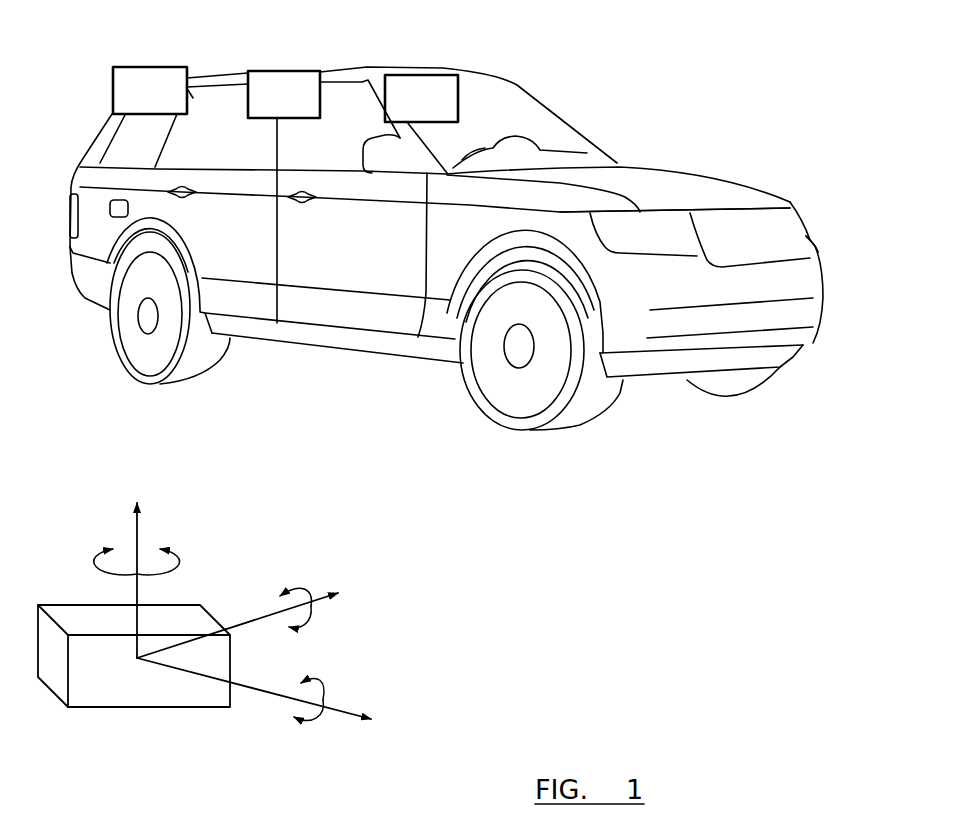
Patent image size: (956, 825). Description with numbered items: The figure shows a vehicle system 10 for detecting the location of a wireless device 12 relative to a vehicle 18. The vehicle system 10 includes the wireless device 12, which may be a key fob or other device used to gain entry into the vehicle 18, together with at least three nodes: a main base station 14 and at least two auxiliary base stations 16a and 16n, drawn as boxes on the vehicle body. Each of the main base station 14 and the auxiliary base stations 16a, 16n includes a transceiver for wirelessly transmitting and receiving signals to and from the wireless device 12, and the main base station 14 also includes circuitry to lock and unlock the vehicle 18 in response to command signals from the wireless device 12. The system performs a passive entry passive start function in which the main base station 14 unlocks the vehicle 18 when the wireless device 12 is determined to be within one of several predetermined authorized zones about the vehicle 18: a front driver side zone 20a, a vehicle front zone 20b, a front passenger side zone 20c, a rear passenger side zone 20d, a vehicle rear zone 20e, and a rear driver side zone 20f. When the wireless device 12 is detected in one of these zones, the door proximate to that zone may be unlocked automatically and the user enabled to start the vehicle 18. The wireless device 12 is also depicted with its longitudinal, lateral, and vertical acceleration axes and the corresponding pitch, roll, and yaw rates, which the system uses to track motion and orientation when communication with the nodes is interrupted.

The vehicle system 10 is at (580, 455).
The wireless device 12 is at (108, 684).
The main base station 14 is at (421, 98).
The auxiliary base station 16a is at (284, 94).
The auxiliary base station 16n is at (150, 90).
The vehicle 18 is at (812, 241).
The front driver side zone 20a is at (733, 129).
The vehicle front zone 20b is at (815, 343).
The front passenger side zone 20c is at (438, 286).
The rear passenger side zone 20d is at (107, 337).
The vehicle rear zone 20e is at (63, 200).
The rear driver side zone 20f is at (272, 43).